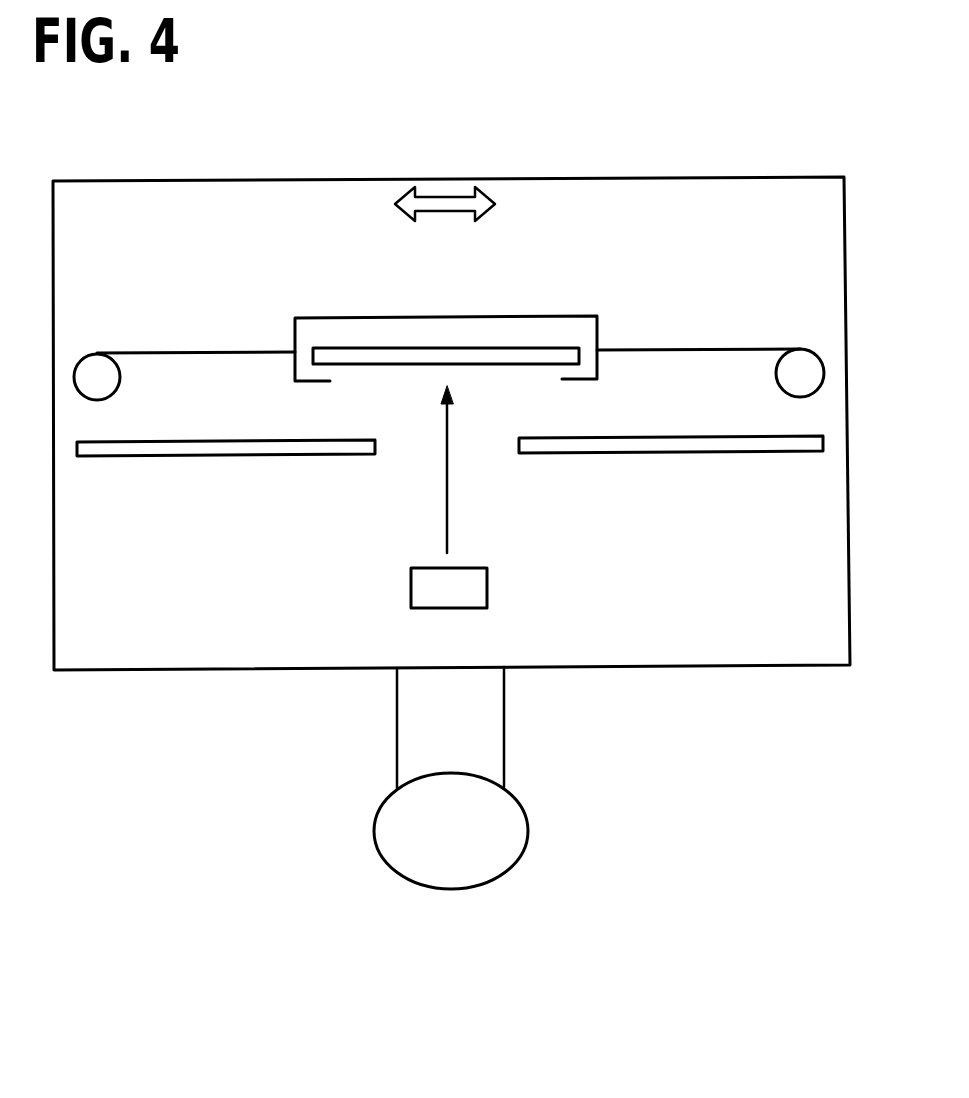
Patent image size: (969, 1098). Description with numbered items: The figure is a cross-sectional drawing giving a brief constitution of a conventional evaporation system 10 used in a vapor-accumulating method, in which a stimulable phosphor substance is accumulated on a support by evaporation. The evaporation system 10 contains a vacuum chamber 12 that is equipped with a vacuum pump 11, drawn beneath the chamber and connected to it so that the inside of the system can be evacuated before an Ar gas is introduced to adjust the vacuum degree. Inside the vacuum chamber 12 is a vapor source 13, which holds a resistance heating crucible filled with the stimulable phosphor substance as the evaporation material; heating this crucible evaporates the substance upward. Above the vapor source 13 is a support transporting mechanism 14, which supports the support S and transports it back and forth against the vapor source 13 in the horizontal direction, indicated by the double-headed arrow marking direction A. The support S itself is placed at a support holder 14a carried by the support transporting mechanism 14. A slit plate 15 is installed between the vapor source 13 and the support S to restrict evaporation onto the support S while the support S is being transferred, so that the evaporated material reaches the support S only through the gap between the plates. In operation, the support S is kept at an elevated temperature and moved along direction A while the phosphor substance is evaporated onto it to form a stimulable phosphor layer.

The evaporation system 10 is at (649, 153).
The vacuum pump 11 is at (528, 828).
The vacuum chamber 12 is at (845, 286).
The vapor source 13 is at (487, 585).
The support transporting mechanism 14 is at (728, 337).
The support holder 14a is at (294, 329).
The slit plate 15 is at (193, 455).
The support S is at (562, 355).
The direction A is at (461, 204).